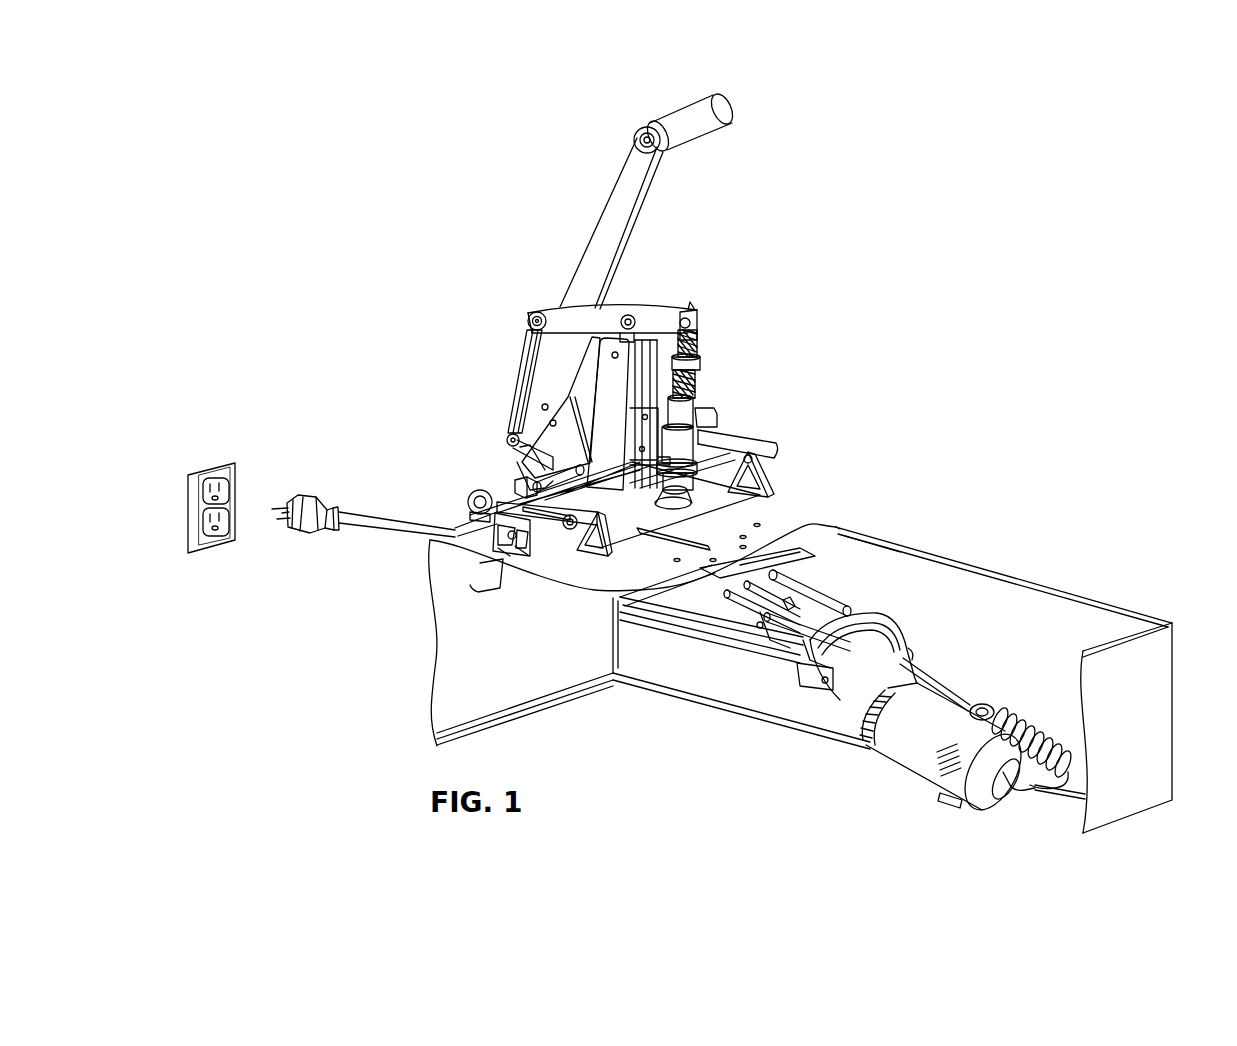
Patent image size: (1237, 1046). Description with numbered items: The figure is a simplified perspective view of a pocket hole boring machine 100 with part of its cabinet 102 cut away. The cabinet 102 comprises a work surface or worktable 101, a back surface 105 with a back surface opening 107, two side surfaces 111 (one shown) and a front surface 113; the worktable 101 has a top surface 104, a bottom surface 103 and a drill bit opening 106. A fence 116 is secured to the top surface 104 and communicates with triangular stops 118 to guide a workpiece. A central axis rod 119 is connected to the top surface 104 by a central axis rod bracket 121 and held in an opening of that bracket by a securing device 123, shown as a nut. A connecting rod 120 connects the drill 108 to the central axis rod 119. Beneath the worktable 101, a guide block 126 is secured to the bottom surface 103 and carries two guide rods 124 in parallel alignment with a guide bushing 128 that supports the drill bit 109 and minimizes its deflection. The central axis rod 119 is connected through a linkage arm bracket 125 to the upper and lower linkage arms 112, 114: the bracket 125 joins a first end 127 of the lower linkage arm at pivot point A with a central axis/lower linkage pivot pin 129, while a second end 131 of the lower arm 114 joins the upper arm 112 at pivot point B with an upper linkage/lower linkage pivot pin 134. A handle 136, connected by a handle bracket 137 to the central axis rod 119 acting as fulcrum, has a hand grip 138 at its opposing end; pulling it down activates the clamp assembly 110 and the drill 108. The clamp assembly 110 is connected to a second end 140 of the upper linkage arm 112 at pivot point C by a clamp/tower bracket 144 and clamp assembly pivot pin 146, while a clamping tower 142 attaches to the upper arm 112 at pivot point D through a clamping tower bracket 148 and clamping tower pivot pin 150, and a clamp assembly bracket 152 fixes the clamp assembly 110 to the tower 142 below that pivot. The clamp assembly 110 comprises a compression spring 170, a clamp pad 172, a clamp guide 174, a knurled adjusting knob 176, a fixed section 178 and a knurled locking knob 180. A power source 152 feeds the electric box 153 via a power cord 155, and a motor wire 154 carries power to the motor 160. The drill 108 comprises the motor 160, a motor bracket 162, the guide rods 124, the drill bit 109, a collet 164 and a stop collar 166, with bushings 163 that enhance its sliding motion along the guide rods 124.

The pocket hole boring machine 100 is at (345, 216).
The work surface (worktable) 101 is at (843, 526).
The cabinet 102 is at (1062, 592).
The bottom surface 103 is at (847, 540).
The top surface 104 is at (788, 515).
The back surface 105 is at (452, 705).
The drill bit opening 106 is at (690, 546).
The back surface opening 107 is at (470, 585).
The drill 108 is at (855, 780).
The drill bit 109 is at (733, 600).
The clamp assembly 110 is at (790, 387).
The side surface 111 is at (1108, 612).
The upper linkage arm 112 is at (568, 307).
The front surface 113 is at (1160, 758).
The lower linkage arm 114 is at (525, 338).
The fence 116 is at (546, 562).
The stops 118 is at (588, 558).
The central axis rod 119 is at (514, 482).
The connecting rod 120 is at (778, 670).
The central axis rod bracket 121 is at (466, 527).
The securing device 123 is at (478, 492).
The guide rods 124 is at (810, 595).
The linkage arm bracket 125 is at (520, 456).
The guide block 126 is at (682, 601).
The first end of the lower linkage arm 127 is at (505, 432).
The guide bushing 128 is at (758, 560).
The central axis/lower linkage pivot pin 129 is at (534, 408).
The second end of the lower linkage arm 131 is at (538, 312).
The upper linkage/lower linkage pivot pin 134 is at (528, 316).
The handle 136 is at (600, 221).
The handle bracket 137 is at (512, 432).
The hand grip 138 is at (688, 113).
The second end of the upper linkage arm 140 is at (698, 312).
The clamping tower 142 is at (605, 378).
The clamp/tower bracket 144 is at (703, 325).
The clamp assembly pivot pin 146 is at (700, 342).
The clamping tower bracket 148 is at (658, 319).
The clamping tower pivot pin 150 is at (630, 315).
The clamp assembly bracket / power source 152 is at (216, 461).
The electric box 153 is at (720, 617).
The motor wire 154 is at (1050, 790).
The power cord 155 is at (383, 535).
The motor 160 is at (945, 698).
The motor bracket 162 is at (850, 615).
The bushings 163 is at (804, 672).
The collet 164 is at (858, 598).
The stop collar 166 is at (790, 581).
The compression spring 170 is at (688, 495).
The clamp pad 172 is at (680, 520).
The clamp guide 174 is at (722, 447).
The adjusting knob 176 is at (703, 395).
The fixed section 178 is at (704, 358).
The locking knob 180 is at (703, 372).